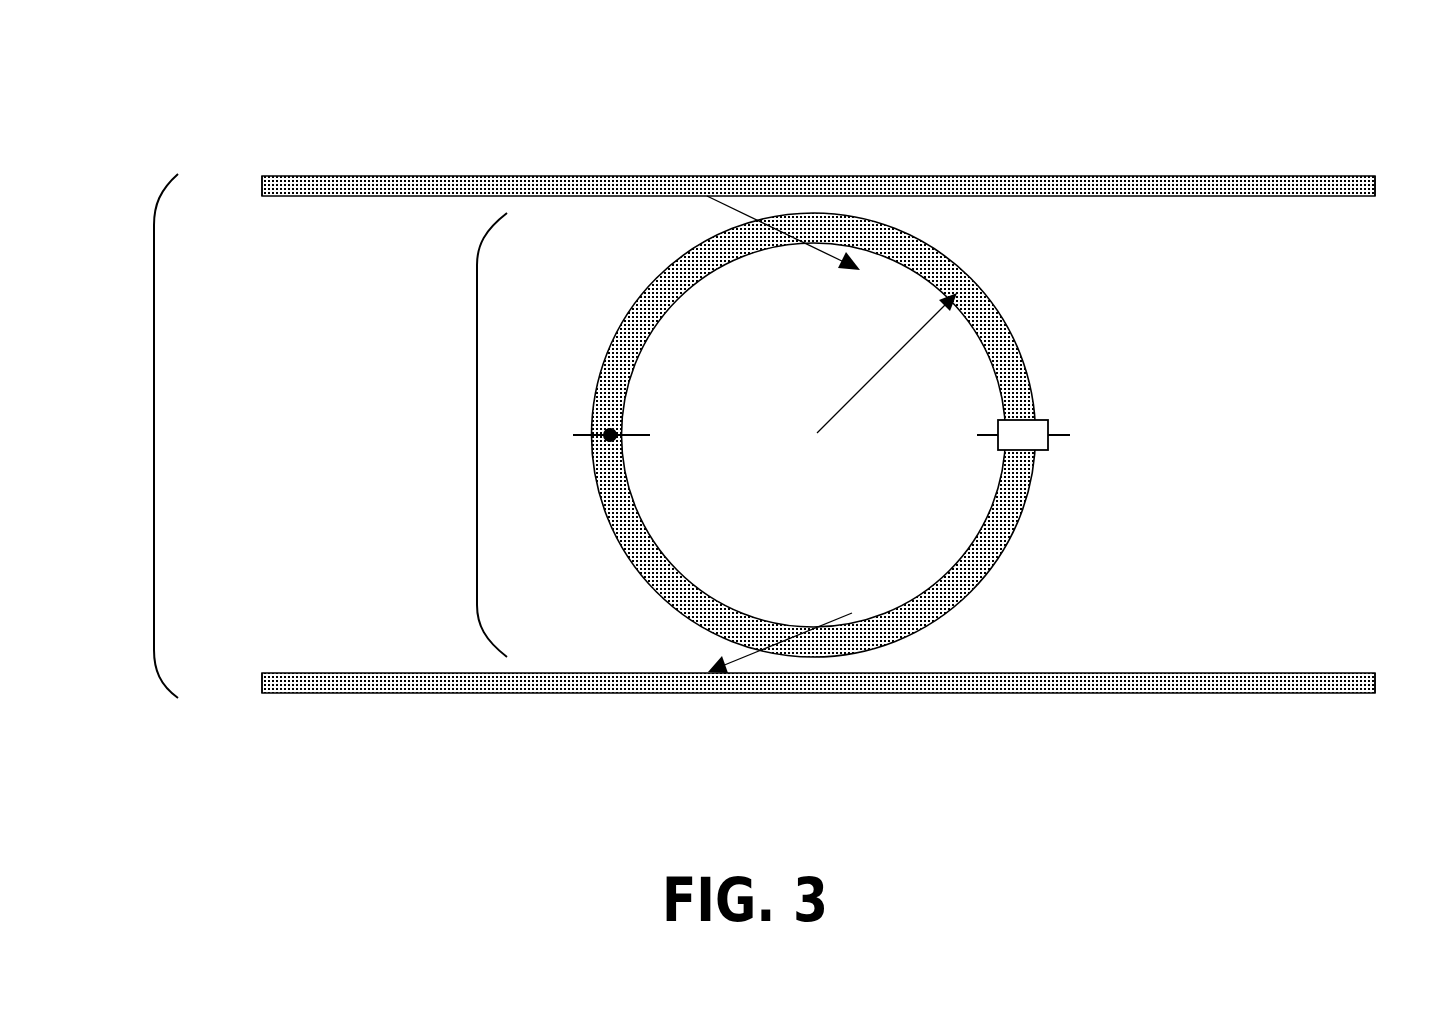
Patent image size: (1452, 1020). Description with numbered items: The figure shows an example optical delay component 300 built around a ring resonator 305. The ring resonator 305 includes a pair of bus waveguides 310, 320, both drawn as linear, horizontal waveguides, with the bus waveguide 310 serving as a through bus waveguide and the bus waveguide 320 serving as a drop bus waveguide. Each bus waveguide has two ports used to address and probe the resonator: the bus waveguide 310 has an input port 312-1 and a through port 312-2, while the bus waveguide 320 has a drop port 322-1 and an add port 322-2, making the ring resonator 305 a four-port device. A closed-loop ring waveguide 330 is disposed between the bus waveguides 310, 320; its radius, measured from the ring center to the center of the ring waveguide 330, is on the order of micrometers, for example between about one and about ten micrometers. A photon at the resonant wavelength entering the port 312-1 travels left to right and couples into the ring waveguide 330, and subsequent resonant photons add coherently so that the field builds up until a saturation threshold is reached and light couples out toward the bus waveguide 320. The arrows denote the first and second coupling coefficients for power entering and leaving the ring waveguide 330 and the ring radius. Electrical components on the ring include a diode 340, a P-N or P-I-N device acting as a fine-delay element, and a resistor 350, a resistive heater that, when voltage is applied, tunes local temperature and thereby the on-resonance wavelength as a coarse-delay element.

The optical delay component 300 is at (159, 39).
The ring resonator 305 is at (154, 437).
The bus waveguide 310 is at (1052, 175).
The port 312-1 is at (255, 199).
The port 312-2 is at (1448, 199).
The bus waveguide 320 is at (1053, 672).
The port 322-1 is at (253, 697).
The port 322-2 is at (1445, 696).
The ring waveguide 330 is at (477, 437).
The diode 340 is at (1047, 450).
The resistor 350 is at (598, 443).